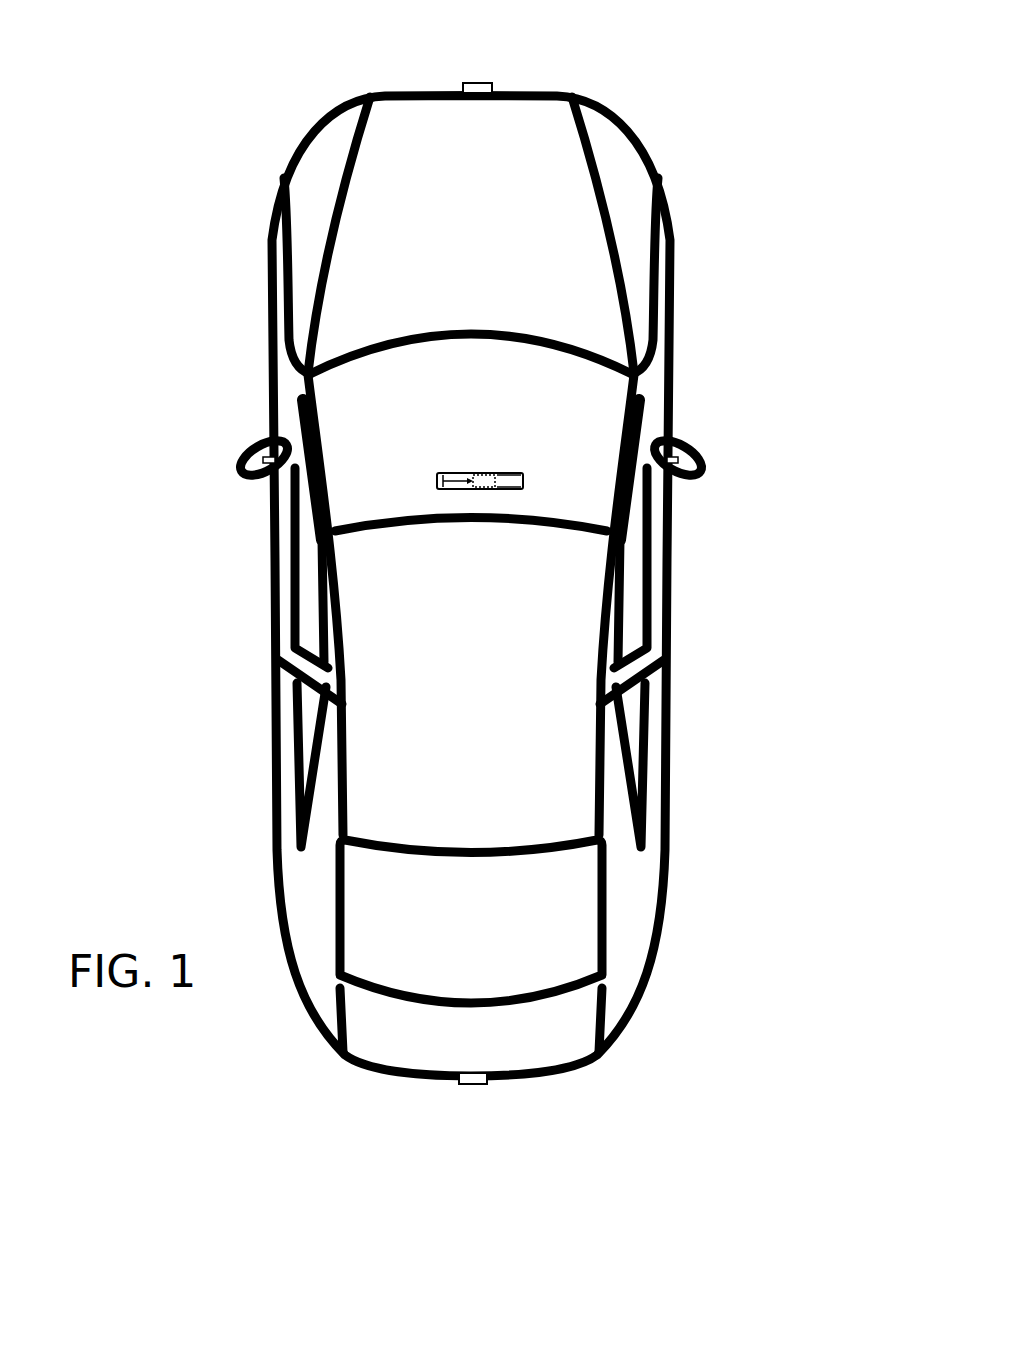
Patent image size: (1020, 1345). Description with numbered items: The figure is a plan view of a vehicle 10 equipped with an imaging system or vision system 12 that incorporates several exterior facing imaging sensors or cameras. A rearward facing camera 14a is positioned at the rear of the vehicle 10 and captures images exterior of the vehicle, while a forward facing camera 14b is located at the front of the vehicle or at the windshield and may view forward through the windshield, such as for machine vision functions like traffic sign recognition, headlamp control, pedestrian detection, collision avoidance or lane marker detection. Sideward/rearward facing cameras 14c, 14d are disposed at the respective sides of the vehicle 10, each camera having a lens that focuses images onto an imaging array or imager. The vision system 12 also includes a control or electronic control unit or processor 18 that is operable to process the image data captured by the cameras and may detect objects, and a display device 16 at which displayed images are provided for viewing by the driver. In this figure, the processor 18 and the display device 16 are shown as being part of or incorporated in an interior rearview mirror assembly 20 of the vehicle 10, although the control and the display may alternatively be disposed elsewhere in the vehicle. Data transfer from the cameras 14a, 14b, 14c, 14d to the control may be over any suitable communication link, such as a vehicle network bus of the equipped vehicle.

The vehicle 10 is at (213, 178).
The vision system 12 is at (411, 1112).
The rearward facing camera 14a is at (473, 1080).
The forward facing camera 14b is at (482, 82).
The sideward/rearward facing camera 14c is at (260, 453).
The sideward/rearward facing camera 14d is at (682, 455).
The display device 16 is at (455, 474).
The processor 18 is at (479, 476).
The interior rearview mirror assembly 20 is at (522, 477).